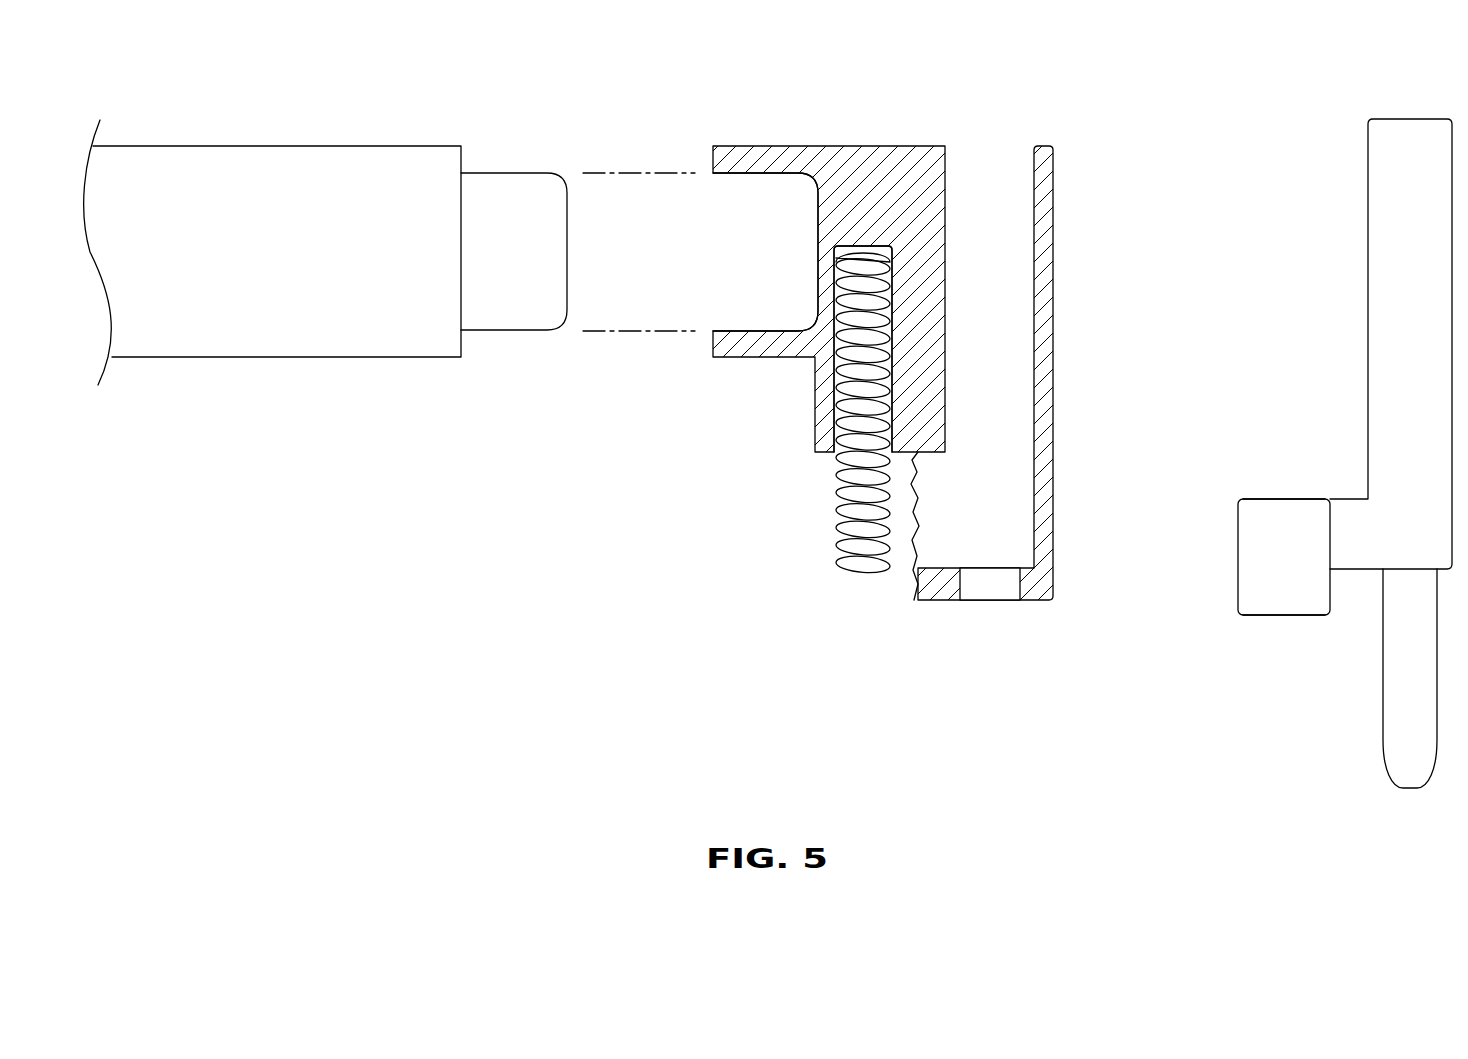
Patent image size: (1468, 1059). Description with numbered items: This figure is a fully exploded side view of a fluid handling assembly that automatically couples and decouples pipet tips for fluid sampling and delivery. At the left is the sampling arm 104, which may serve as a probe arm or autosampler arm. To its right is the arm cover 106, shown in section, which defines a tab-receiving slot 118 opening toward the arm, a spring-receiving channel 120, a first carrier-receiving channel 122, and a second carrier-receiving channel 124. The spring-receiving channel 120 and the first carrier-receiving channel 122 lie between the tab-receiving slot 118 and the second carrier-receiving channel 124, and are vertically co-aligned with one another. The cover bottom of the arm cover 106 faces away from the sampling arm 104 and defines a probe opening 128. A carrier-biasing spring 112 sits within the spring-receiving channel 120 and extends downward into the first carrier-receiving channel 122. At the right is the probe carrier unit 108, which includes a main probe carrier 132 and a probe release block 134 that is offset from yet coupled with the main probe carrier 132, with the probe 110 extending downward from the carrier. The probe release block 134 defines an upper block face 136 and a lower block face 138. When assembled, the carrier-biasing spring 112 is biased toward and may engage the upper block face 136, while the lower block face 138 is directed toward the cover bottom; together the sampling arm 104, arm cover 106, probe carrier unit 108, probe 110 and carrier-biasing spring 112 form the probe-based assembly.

The sampling arm 104 is at (258, 127).
The arm cover 106 is at (850, 127).
The probe carrier unit 108 is at (1348, 270).
The probe 110 is at (1393, 714).
The carrier-biasing spring 112 is at (847, 515).
The tab-receiving slot 118 is at (720, 232).
The spring-receiving channel 120 is at (863, 250).
The first carrier-receiving channel 122 is at (902, 563).
The second carrier-receiving channel 124 is at (1010, 155).
The probe opening 128 is at (987, 587).
The main probe carrier 132 is at (1409, 133).
The probe release block 134 is at (1250, 547).
The upper block face 136 is at (1250, 496).
The lower block face 138 is at (1250, 617).